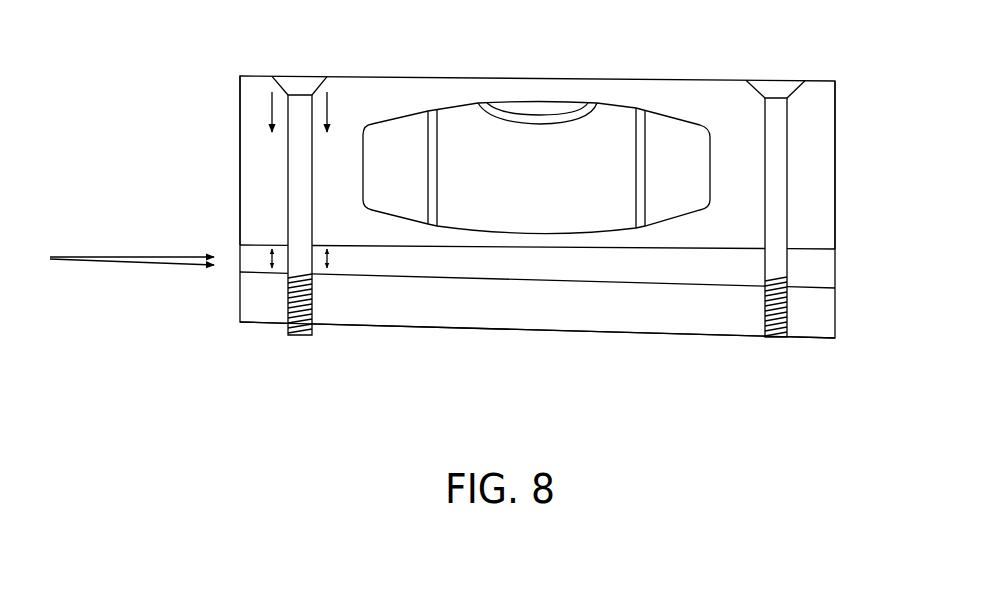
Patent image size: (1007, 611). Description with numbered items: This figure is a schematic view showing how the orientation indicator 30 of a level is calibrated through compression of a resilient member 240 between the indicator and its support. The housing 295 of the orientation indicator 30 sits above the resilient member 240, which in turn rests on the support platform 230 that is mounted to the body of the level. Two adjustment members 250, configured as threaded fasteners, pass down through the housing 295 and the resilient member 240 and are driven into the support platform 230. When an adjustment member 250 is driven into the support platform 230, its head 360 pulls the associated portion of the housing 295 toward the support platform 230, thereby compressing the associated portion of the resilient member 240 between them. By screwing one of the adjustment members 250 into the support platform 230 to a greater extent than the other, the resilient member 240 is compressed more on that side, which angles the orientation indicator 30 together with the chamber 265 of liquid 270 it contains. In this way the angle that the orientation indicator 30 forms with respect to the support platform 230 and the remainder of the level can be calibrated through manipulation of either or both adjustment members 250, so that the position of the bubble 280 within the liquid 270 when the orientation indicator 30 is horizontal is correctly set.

The orientation indicator 30 is at (864, 110).
The support platform 230 is at (597, 318).
The resilient member 240 is at (690, 278).
The adjustment members 250 is at (284, 173).
The head 360 is at (298, 90).
The housing 295 is at (393, 110).
The liquid 270 is at (478, 152).
The chamber 265 is at (678, 115).
The bubble 280 is at (533, 105).